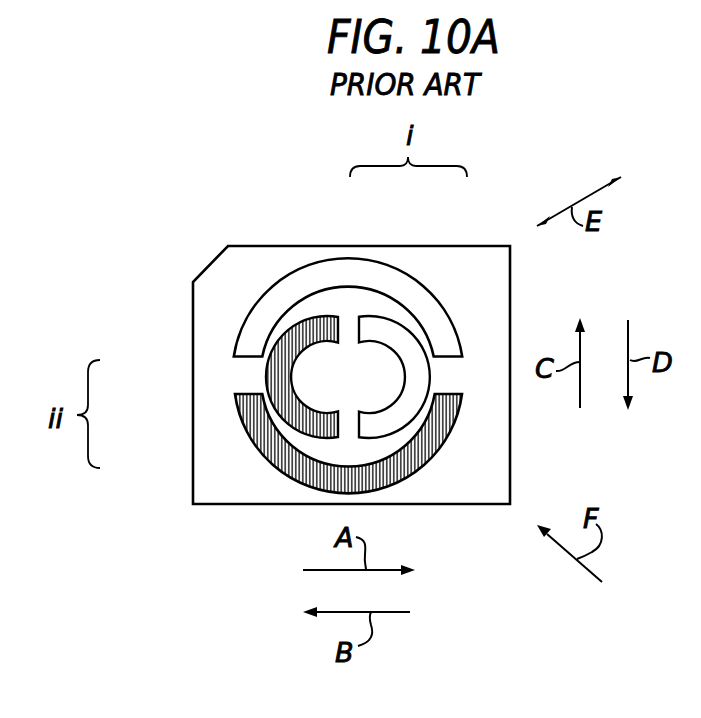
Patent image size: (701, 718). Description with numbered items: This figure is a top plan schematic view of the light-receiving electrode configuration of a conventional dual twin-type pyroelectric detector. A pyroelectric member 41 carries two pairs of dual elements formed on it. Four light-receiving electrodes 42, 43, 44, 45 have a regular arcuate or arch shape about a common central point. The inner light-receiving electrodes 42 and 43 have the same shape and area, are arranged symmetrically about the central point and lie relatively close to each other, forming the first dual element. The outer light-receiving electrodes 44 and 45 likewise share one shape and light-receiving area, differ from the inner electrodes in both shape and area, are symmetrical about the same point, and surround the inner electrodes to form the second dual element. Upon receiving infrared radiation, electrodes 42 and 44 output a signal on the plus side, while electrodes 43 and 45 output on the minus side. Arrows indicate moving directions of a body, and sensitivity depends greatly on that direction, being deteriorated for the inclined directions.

The pyroelectric member 41 is at (198, 307).
The light-receiving electrode 42 is at (338, 319).
The light-receiving electrode 43 is at (383, 326).
The light-receiving electrode 44 is at (241, 415).
The light-receiving electrode 45 is at (238, 357).